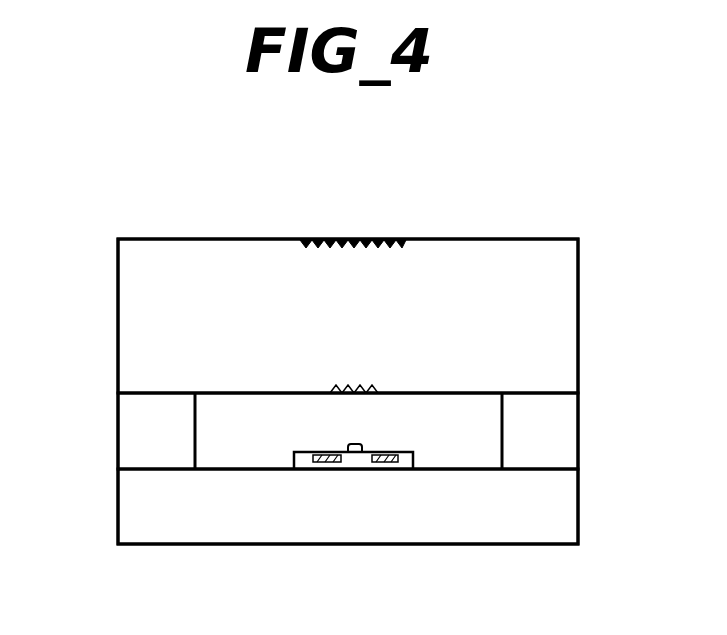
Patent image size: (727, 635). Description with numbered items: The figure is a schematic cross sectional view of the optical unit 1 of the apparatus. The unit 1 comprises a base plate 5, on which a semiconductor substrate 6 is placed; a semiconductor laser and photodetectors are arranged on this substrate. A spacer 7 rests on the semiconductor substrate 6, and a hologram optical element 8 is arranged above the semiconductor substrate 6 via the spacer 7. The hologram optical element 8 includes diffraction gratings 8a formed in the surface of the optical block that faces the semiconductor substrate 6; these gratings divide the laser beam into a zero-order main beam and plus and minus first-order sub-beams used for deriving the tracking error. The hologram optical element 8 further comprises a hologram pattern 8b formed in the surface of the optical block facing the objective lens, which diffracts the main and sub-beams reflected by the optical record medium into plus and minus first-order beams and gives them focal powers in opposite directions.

The unit 1 is at (595, 405).
The base plate 5 is at (220, 527).
The semiconductor substrate 6 is at (355, 460).
The spacer 7 is at (130, 435).
The hologram optical element 8 is at (130, 320).
The diffraction gratings 8a is at (358, 394).
The hologram pattern 8b is at (360, 238).